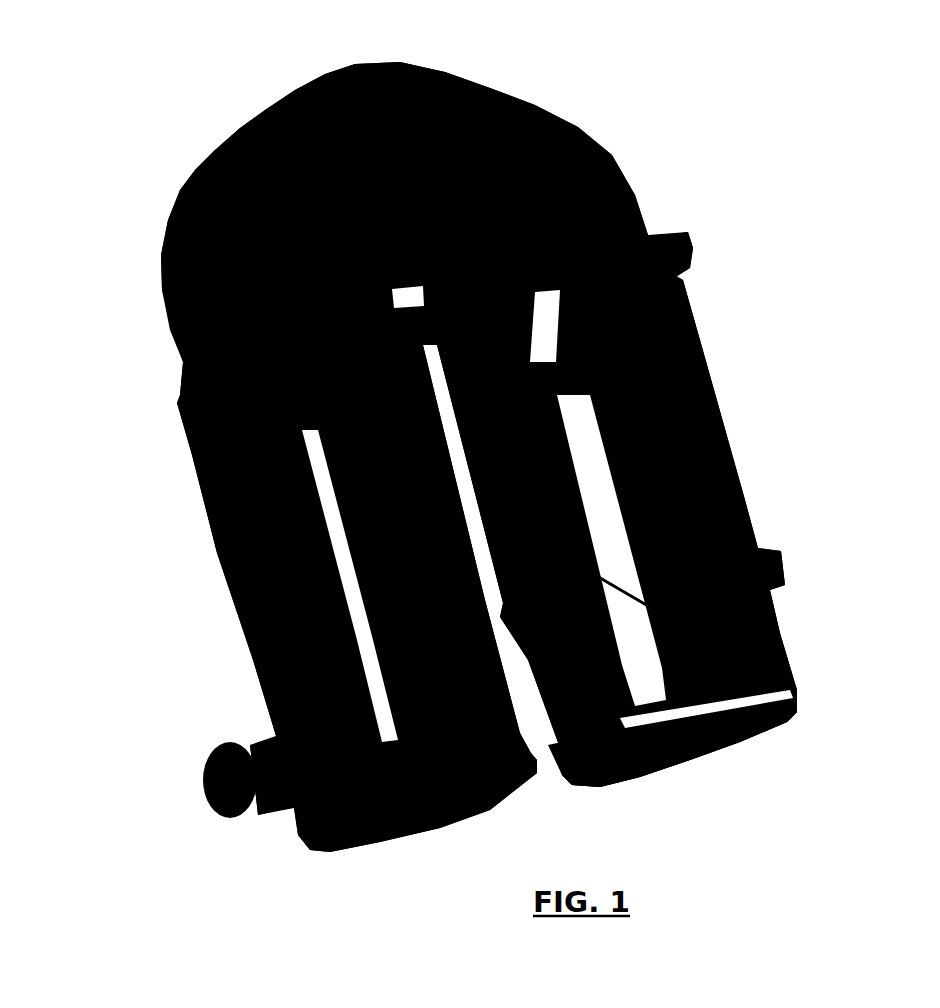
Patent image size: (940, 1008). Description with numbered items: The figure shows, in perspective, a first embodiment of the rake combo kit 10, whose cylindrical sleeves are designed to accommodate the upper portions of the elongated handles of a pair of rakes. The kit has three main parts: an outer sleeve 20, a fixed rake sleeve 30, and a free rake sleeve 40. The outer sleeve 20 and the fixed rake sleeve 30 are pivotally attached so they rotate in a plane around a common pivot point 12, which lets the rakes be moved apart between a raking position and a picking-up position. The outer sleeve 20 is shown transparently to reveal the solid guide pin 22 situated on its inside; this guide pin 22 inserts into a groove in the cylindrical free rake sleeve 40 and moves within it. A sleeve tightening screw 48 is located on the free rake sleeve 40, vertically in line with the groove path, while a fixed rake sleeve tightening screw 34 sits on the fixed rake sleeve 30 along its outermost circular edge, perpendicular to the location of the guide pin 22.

The rake combo kit 10 is at (645, 141).
The common pivot point 12 is at (260, 127).
The outer sleeve 20 is at (733, 460).
The guide pin 22 is at (683, 325).
The fixed rake sleeve 30 is at (223, 555).
The fixed rake sleeve tightening screw 34 is at (207, 773).
The free rake sleeve 40 is at (800, 700).
The sleeve tightening screw 48 is at (773, 617).